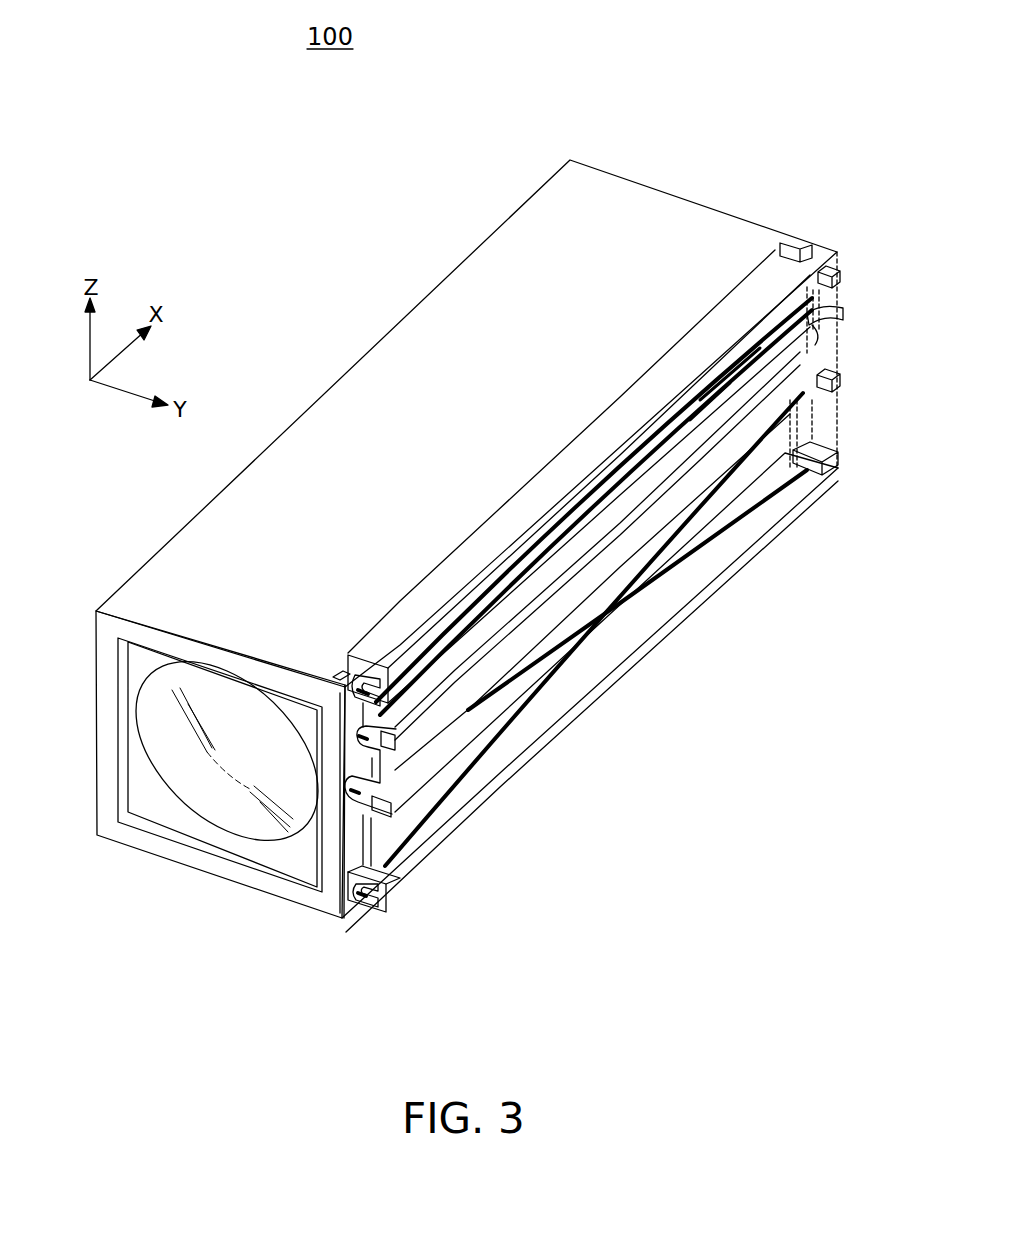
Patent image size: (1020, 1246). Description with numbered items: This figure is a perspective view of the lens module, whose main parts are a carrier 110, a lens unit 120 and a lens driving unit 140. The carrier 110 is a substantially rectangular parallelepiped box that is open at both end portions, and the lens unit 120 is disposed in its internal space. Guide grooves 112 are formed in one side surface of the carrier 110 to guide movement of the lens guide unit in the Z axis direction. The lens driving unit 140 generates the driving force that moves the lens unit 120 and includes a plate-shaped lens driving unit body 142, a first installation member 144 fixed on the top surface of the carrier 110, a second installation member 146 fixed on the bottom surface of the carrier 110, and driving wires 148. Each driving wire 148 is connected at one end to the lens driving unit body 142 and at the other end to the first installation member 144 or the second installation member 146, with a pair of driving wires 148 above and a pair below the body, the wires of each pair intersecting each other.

The carrier 110 is at (423, 334).
The guide grooves 112 is at (300, 650).
The lens unit 120 is at (158, 793).
The lens driving unit 140 is at (557, 656).
The lens driving unit body 142 is at (412, 750).
The first installation member 144 is at (300, 650).
The second installation member 146 is at (468, 795).
The driving wires 148 is at (492, 623).